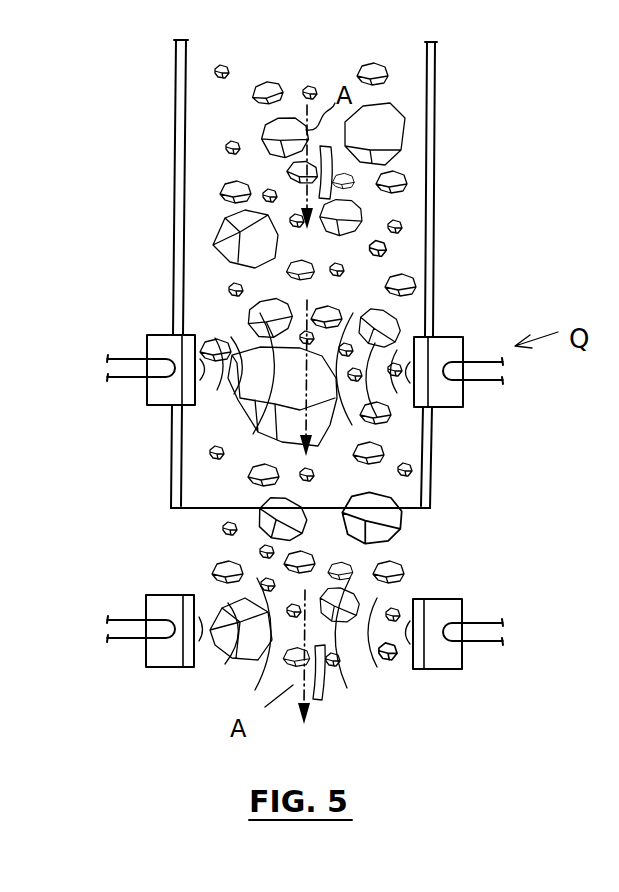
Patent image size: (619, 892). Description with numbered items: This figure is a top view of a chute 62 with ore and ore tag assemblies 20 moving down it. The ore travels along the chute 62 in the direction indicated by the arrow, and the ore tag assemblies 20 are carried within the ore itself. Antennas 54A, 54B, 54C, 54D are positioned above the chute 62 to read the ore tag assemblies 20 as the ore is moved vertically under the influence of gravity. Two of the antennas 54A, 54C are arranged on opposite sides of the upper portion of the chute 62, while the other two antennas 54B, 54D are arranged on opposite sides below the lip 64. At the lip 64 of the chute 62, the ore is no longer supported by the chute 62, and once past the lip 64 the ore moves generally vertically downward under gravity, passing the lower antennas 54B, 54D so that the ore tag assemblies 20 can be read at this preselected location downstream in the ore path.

The chute 62 is at (428, 60).
The lip 64 is at (202, 512).
The ore tag assembly 20 is at (334, 166).
The antenna 54A is at (160, 340).
The antenna 54B is at (162, 656).
The antenna 54C is at (444, 348).
The antenna 54D is at (442, 612).